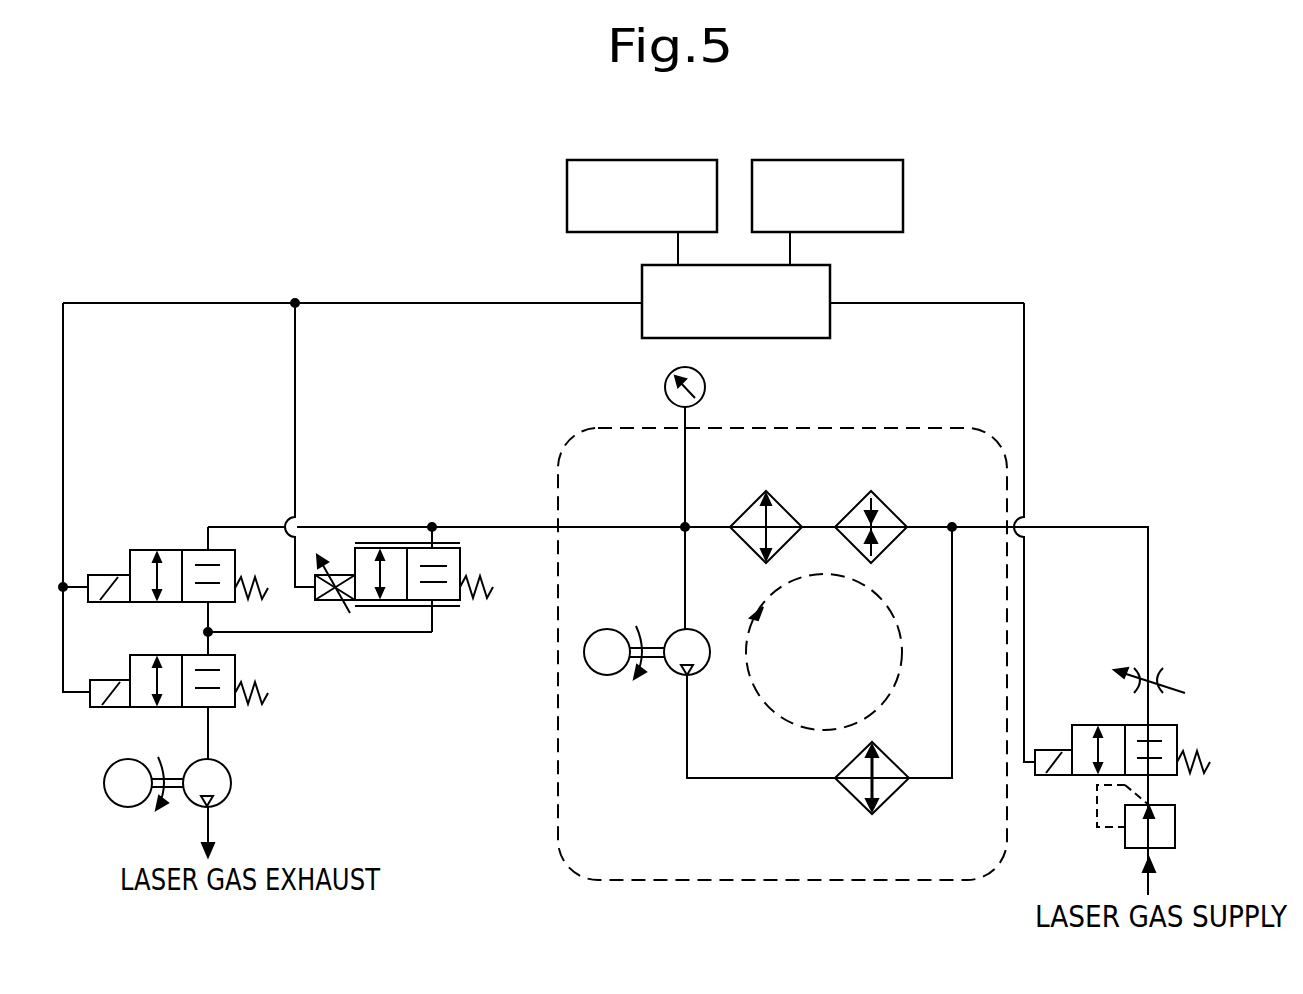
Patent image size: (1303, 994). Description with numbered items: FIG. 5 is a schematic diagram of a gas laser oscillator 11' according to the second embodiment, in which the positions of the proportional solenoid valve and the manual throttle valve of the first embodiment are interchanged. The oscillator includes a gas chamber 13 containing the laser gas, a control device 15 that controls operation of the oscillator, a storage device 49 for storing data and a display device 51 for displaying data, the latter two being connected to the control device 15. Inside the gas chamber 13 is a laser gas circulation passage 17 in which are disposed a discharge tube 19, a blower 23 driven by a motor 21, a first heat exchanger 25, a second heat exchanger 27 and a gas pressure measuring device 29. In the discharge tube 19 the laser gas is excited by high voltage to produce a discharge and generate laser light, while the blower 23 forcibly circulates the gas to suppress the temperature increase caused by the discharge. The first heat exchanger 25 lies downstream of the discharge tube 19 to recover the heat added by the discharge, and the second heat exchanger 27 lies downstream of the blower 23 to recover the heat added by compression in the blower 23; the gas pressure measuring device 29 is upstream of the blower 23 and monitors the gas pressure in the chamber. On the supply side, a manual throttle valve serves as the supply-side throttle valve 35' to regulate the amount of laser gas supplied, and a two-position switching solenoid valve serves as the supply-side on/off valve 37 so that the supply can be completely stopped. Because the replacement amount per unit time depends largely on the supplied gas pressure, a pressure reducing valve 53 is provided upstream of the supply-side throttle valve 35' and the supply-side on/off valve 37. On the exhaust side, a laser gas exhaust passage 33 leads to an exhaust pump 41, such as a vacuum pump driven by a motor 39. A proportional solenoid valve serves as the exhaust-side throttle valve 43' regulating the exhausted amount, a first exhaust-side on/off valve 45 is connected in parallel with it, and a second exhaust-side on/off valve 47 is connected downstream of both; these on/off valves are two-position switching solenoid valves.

The gas laser oscillator 11' is at (1144, 258).
The gas chamber 13 is at (872, 428).
The control device 15 is at (830, 281).
The laser gas circulation passage 17 is at (742, 778).
The discharge tube 19 is at (893, 503).
The motor 21 is at (602, 675).
The blower 23 is at (672, 675).
The first heat exchanger 25 is at (783, 502).
The second heat exchanger 27 is at (892, 793).
The gas pressure measuring device 29 is at (705, 386).
The laser gas exhaust passage 33 is at (376, 527).
The supply-side throttle valve 35' is at (1182, 677).
The supply-side on/off valve 37 is at (1177, 735).
The motor 39 is at (120, 806).
The exhaust pump 41 is at (231, 792).
The exhaust-side throttle valve 43' is at (424, 574).
The first exhaust-side on/off valve 45 is at (235, 562).
The second exhaust-side on/off valve 47 is at (235, 666).
The storage device 49 is at (652, 158).
The display device 51 is at (838, 158).
The pressure reducing valve 53 is at (1175, 829).